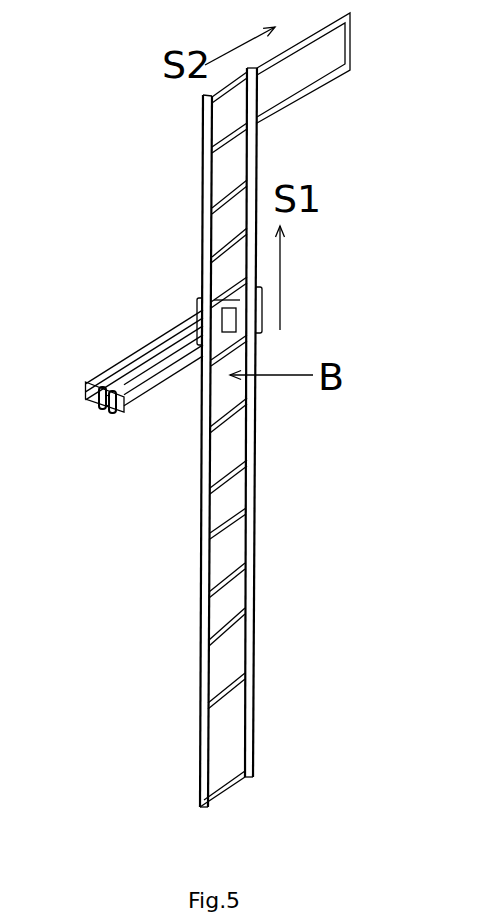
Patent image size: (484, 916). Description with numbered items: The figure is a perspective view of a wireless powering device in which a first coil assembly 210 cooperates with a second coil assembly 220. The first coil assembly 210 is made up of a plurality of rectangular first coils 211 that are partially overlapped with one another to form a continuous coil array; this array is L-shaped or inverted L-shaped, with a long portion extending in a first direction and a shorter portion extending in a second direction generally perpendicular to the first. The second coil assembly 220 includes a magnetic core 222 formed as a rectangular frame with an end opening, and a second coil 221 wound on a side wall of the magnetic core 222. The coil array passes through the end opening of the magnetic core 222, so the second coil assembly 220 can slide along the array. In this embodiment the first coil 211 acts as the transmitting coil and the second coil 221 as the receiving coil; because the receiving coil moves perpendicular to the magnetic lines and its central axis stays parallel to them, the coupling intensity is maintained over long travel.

The first coil assembly 210 is at (175, 150).
The first coil 211 is at (305, 100).
The second coil assembly 220 is at (172, 325).
The second coil 221 is at (101, 410).
The magnetic core 222 is at (133, 362).